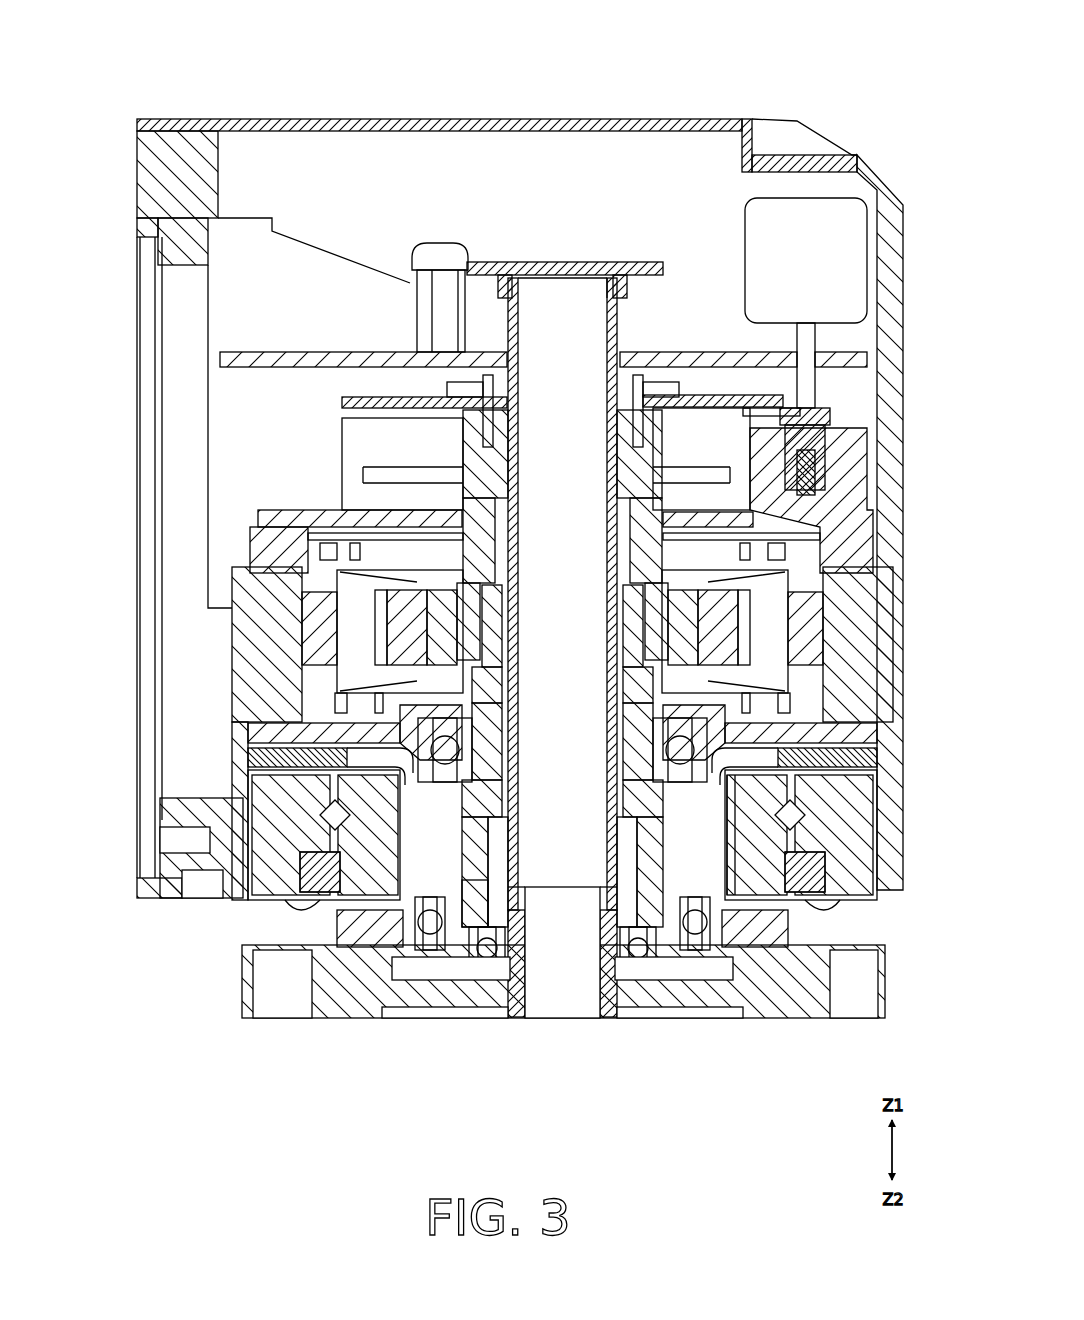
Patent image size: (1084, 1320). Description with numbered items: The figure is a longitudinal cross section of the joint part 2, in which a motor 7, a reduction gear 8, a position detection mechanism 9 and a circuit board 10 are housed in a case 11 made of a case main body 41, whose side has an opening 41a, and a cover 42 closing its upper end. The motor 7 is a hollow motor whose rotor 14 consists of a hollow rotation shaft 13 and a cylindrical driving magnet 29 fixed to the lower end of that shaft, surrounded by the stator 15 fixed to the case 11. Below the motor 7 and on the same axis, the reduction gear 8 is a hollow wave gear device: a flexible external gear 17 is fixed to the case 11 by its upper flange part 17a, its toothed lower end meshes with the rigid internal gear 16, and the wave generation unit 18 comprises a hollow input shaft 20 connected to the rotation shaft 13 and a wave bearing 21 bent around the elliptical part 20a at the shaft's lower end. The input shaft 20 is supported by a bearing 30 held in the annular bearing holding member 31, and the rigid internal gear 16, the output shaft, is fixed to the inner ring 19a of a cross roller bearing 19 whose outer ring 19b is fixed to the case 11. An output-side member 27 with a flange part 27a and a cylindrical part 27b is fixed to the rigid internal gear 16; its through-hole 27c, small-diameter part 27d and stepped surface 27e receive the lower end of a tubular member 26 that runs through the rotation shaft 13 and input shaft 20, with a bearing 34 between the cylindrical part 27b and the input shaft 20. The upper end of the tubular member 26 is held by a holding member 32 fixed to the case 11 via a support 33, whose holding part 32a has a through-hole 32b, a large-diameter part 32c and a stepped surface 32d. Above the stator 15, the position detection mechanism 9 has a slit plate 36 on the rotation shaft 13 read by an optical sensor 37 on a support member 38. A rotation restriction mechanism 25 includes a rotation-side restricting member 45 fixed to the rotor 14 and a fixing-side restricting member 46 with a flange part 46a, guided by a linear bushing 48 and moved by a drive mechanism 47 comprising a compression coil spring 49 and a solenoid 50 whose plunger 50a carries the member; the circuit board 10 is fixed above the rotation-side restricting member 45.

The joint part 2 is at (845, 55).
The cover 42 is at (318, 117).
The rotation restriction mechanism 25 is at (852, 188).
The case 11 is at (162, 595).
The case main body 41 is at (160, 898).
The opening 41a is at (152, 878).
The circuit board 10 is at (270, 352).
The support 33 is at (412, 320).
The tubular member 26 is at (620, 330).
The holding member 32 is at (602, 260).
The holding part 32a is at (617, 289).
The through-hole 32b is at (531, 262).
The large-diameter part 32c is at (627, 295).
The stepped surface 32d is at (605, 290).
The drive mechanism 47 is at (772, 283).
The solenoid 50 is at (745, 240).
The plunger 50a is at (795, 340).
The rotation-side restricting member 45 is at (345, 398).
The position detection mechanism 9 is at (493, 459).
The sensor 37 is at (340, 480).
The slit plate 36 is at (417, 475).
The support member 38 is at (278, 510).
The fixing-side restricting member 46 is at (774, 472).
The flange part 46a is at (775, 412).
The linear bushing 48 is at (757, 451).
The compression coil spring 49 is at (790, 470).
The rotation shaft 13 is at (562, 535).
The rotor 14 is at (507, 552).
The wave generation unit 18 is at (562, 756).
The input shaft 20 is at (505, 772).
The elliptical part 20a is at (455, 890).
The bearing 30 is at (425, 782).
The wave bearing 21 is at (698, 897).
The bearing 34 is at (650, 970).
The motor 7 is at (527, 644).
The stator 15 is at (300, 620).
The driving magnet 29 is at (515, 612).
The bearing holding member 31 is at (250, 728).
The flange part 17a is at (248, 757).
The flexible external gear 17 is at (400, 835).
The cross roller bearing 19 is at (816, 858).
The inner ring 19a is at (727, 825).
The outer ring 19b is at (850, 900).
The reduction gear 8 is at (505, 928).
The rigid internal gear 16 is at (337, 925).
The output-side member 27 is at (563, 945).
The flange part 27a is at (563, 945).
The cylindrical part 27b is at (528, 883).
The through-hole 27c is at (595, 1005).
The small-diameter part 27d is at (597, 887).
The stepped surface 27e is at (605, 905).